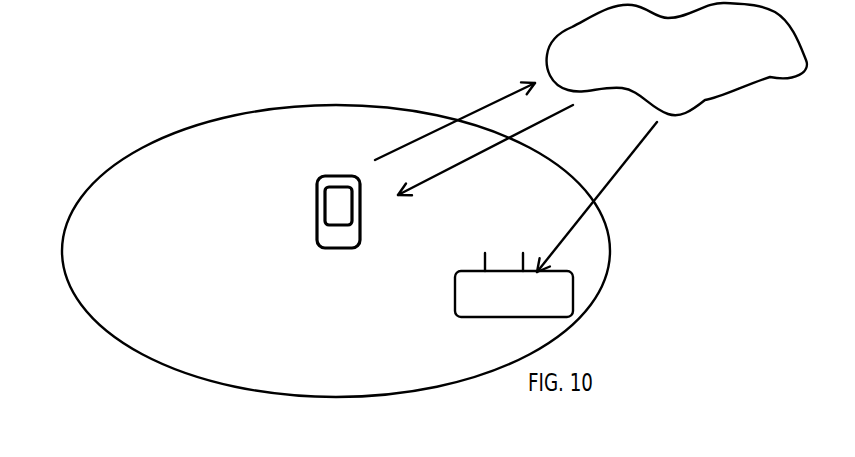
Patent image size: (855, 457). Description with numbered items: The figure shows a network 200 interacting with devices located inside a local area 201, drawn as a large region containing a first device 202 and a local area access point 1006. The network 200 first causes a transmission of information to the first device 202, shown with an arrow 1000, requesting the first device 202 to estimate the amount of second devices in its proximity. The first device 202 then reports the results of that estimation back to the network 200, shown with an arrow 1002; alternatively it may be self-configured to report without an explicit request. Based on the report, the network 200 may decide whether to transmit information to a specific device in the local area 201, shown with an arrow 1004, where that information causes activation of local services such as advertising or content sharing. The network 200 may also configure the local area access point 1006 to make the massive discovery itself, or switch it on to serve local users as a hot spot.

The network 200 is at (677, 59).
The local area 201 is at (263, 110).
The first device 202 is at (345, 249).
The arrow 1000 is at (506, 92).
The arrow 1002 is at (468, 162).
The arrow 1004 is at (609, 187).
The local area access point 1006 is at (520, 317).